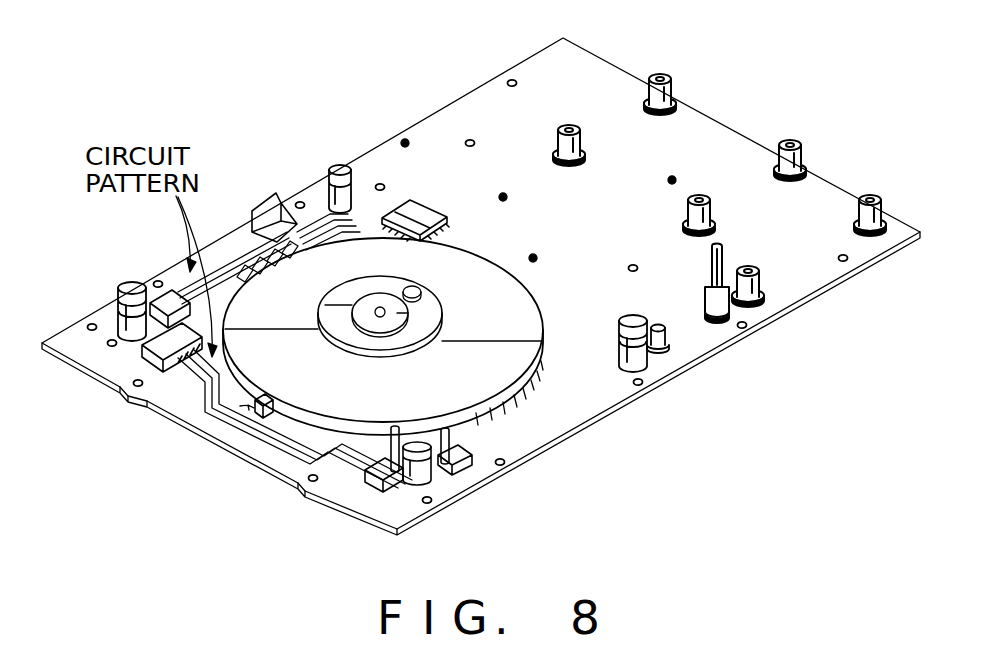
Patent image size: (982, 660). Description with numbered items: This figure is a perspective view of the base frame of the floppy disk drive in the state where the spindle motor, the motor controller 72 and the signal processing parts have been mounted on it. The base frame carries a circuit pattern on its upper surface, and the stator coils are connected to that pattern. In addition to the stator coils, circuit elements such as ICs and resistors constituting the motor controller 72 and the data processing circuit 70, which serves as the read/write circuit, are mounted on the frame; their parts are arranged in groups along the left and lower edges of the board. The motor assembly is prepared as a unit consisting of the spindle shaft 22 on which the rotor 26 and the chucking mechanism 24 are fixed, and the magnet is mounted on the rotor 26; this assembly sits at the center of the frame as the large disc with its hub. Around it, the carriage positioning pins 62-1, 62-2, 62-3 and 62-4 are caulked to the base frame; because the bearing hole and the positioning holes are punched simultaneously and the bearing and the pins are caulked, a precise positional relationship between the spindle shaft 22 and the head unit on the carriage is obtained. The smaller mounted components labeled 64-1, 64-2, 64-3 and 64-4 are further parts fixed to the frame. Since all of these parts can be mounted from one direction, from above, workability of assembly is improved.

The spindle shaft 22 is at (380, 318).
The chucking mechanism 24 is at (411, 333).
The rotor 26 is at (266, 371).
The carriage positioning pin 62-1 is at (557, 127).
The carriage positioning pin 62-2 is at (688, 210).
The carriage positioning pin 62-3 is at (797, 150).
The carriage positioning pin 62-4 is at (672, 84).
The capacitor 64-1 is at (131, 283).
The capacitor assembly 64-2 is at (432, 458).
The capacitor 64-3 is at (668, 352).
The capacitor 64-4 is at (338, 165).
The data processing circuit 70 is at (351, 486).
The motor controller 72 is at (255, 197).